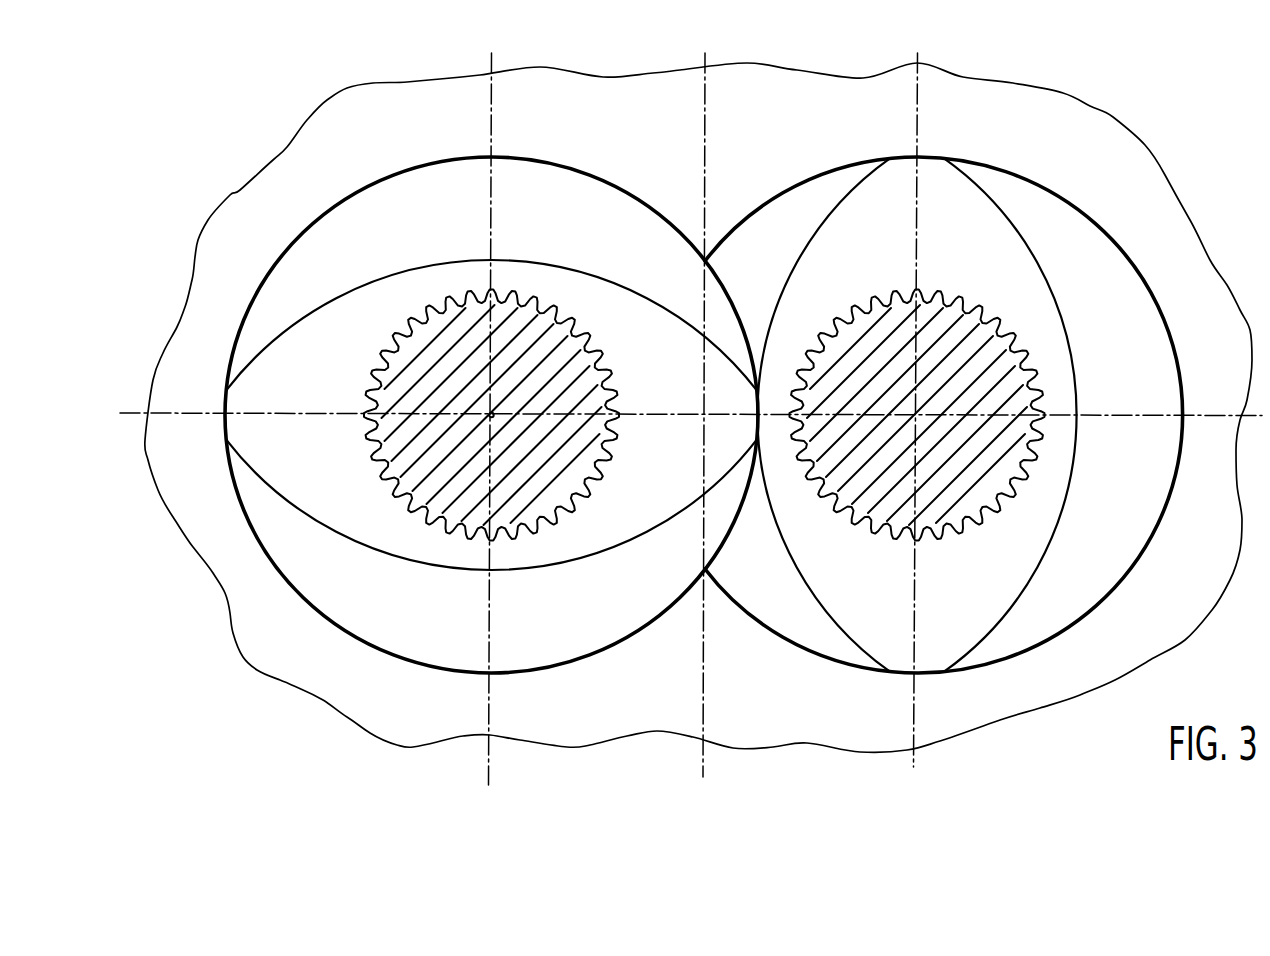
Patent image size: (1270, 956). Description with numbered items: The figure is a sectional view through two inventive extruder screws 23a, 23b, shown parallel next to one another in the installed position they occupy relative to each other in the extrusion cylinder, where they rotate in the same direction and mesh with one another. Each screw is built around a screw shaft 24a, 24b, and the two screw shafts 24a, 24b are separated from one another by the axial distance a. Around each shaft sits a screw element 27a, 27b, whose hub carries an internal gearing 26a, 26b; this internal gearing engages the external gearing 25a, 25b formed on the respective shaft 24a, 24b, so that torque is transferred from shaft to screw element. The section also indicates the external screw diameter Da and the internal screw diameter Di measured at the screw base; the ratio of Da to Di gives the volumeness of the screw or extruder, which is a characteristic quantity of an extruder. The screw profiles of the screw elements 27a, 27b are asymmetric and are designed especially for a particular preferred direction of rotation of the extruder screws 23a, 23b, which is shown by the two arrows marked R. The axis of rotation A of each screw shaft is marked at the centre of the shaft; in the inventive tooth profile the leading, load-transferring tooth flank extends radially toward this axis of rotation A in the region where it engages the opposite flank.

The extruder screw 23a is at (310, 192).
The extruder screw 23b is at (1128, 235).
The screw shaft 24a is at (547, 397).
The screw shaft 24b is at (980, 390).
The external gearing 25a is at (432, 327).
The external gearing 25b is at (855, 322).
The internal gearing 26a is at (473, 388).
The internal gearing 26b is at (917, 376).
The screw element 27a is at (577, 187).
The screw element 27b is at (1042, 238).
The axis of rotation A is at (492, 415).
The axial distance a is at (915, 600).
The external screw diameter Da is at (1125, 160).
The internal screw diameter Di is at (759, 798).
The preferred direction of rotation R is at (310, 665).